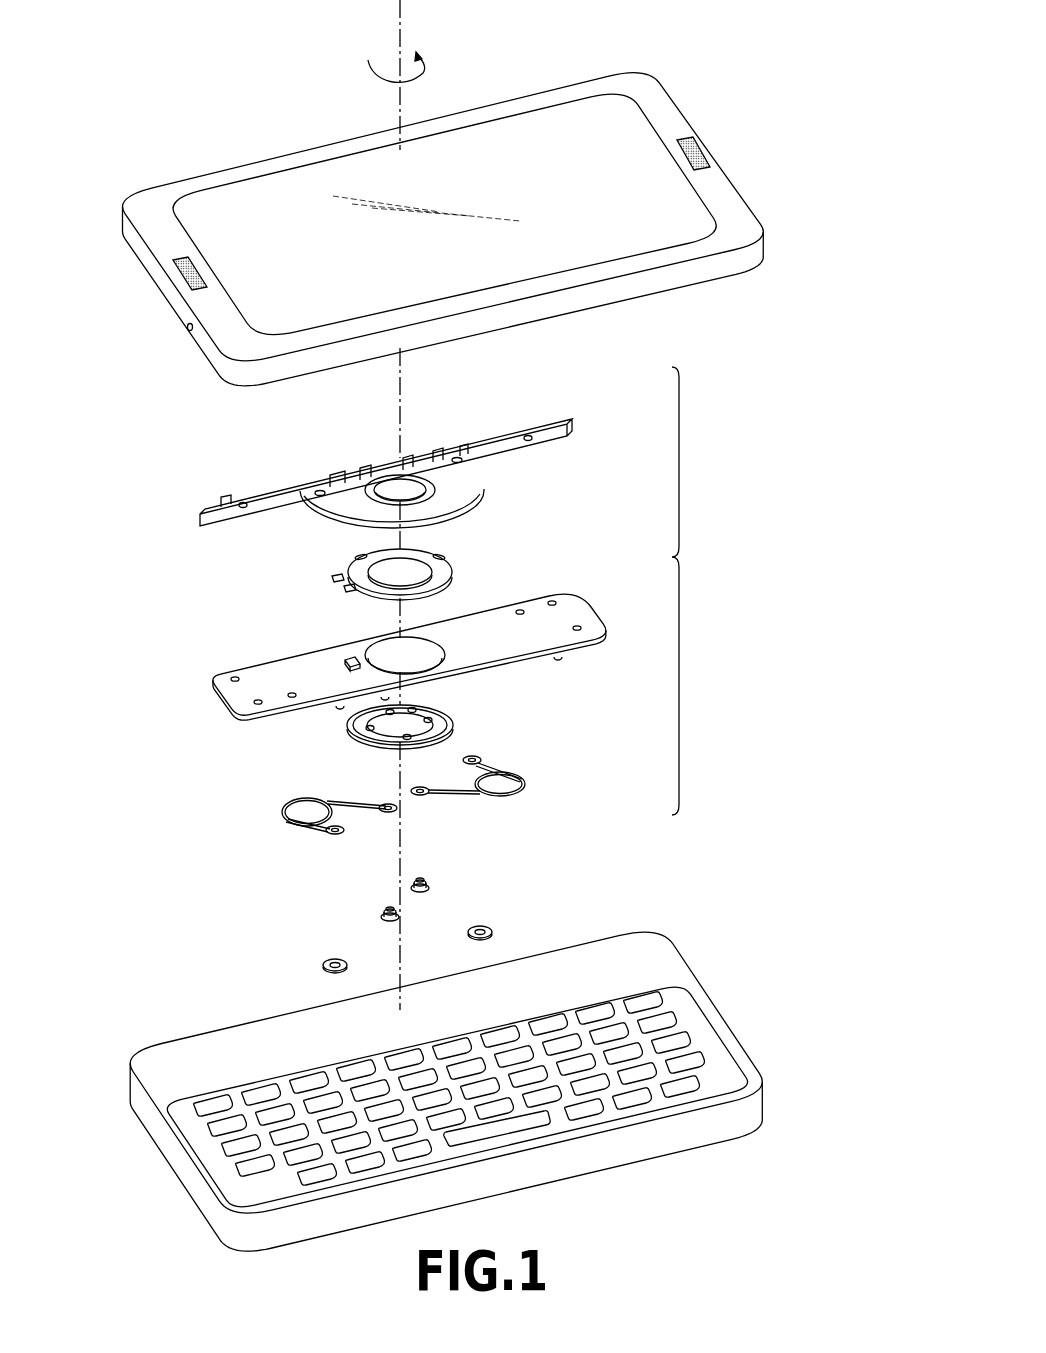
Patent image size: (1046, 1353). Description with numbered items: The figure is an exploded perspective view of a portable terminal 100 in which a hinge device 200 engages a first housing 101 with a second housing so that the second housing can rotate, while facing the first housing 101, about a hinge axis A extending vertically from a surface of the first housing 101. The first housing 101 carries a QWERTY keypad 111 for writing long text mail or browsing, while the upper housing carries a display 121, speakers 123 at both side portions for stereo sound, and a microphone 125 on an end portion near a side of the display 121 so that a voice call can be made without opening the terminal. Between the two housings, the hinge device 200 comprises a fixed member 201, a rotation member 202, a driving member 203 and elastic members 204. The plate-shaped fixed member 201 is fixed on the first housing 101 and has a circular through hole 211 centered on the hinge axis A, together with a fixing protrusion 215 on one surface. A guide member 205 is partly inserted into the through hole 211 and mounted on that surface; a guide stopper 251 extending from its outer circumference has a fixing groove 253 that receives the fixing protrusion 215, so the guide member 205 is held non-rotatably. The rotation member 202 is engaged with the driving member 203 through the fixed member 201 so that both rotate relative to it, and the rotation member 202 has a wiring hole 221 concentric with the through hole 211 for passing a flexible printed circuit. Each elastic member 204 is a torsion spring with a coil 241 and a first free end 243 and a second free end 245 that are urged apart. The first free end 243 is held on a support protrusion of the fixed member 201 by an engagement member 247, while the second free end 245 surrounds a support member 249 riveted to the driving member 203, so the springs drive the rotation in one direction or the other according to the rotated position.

The portable terminal 100 is at (169, 72).
The first housing 101 is at (471, 1065).
The QWERTY keypad 111 is at (657, 953).
The display 121 is at (333, 173).
The speakers 123 is at (700, 150).
The microphone 125 is at (187, 328).
The hinge device 200 is at (449, 672).
The fixed member 201 is at (435, 638).
The rotation member 202 is at (421, 452).
The driving member 203 is at (455, 712).
The elastic member 204 is at (399, 804).
The guide member 205 is at (381, 560).
The through hole 211 is at (413, 648).
The fixing protrusion 215 is at (352, 662).
The wiring hole 221 is at (413, 497).
The coil 241 is at (288, 810).
The first free end 243 is at (317, 832).
The second free end 245 is at (348, 800).
The engagement member 247 is at (490, 930).
The support member 249 is at (433, 883).
The guide stopper 251 is at (336, 578).
The fixing groove 253 is at (346, 590).
The hinge axis A is at (405, 28).